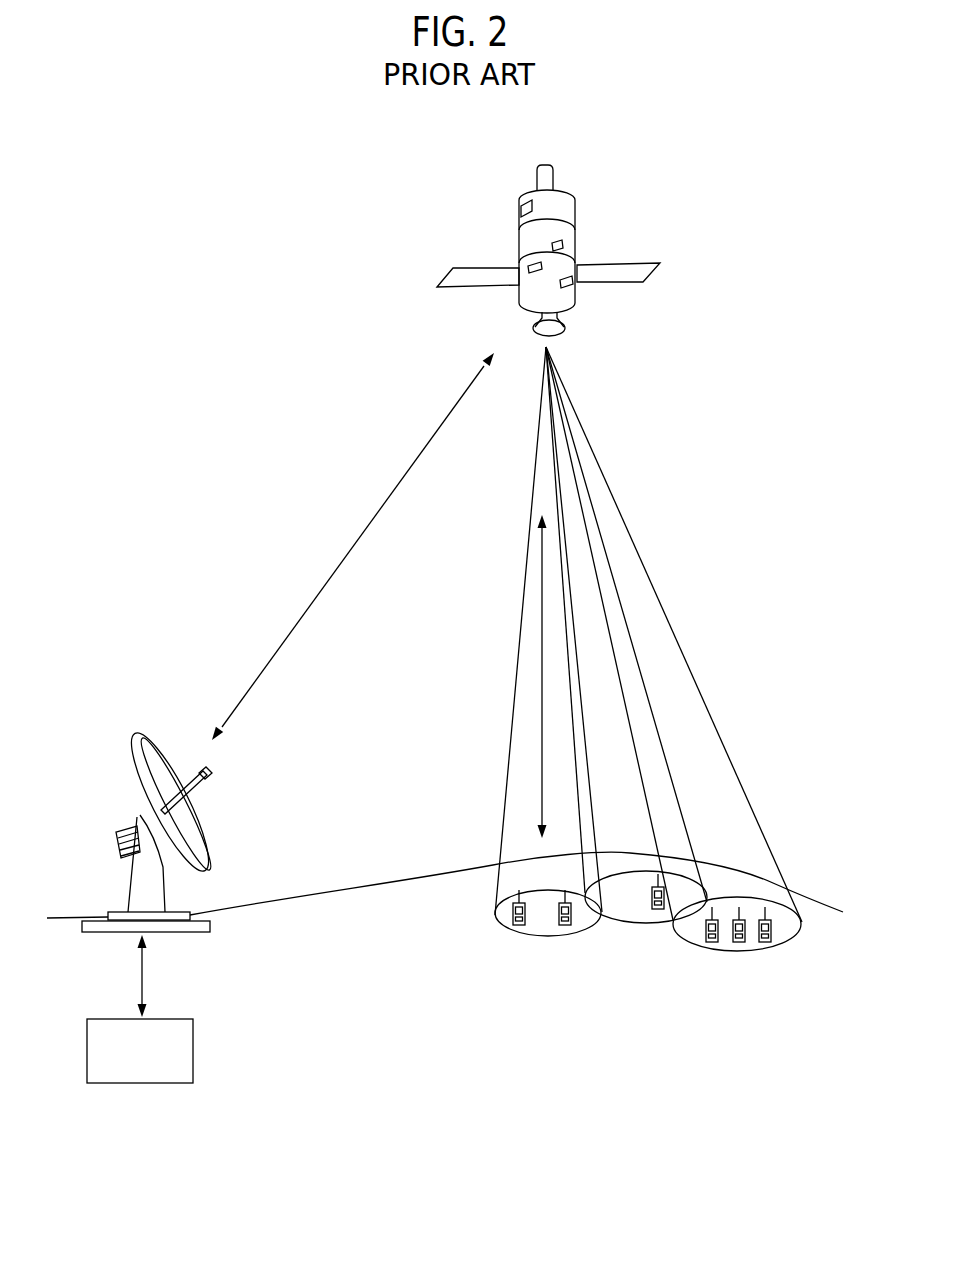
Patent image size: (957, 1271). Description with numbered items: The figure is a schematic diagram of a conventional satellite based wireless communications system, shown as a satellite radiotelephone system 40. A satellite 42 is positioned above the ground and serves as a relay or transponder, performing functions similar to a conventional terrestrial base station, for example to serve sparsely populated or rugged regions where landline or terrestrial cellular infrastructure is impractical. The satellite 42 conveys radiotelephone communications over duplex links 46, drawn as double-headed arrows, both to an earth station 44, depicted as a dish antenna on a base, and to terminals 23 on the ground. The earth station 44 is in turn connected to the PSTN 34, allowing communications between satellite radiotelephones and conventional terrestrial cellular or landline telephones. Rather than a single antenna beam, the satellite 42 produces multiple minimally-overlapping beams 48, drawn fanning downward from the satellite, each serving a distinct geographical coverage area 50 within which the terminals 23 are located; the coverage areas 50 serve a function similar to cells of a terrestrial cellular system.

The satellite radiotelephone system 40 is at (280, 337).
The satellite 42 is at (600, 242).
The earth station 44 is at (108, 933).
The duplex links 46 is at (373, 513).
The beams 48 is at (501, 805).
The coverage areas 50 is at (500, 925).
The terminals 23 is at (523, 925).
The PSTN 34 is at (197, 1028).